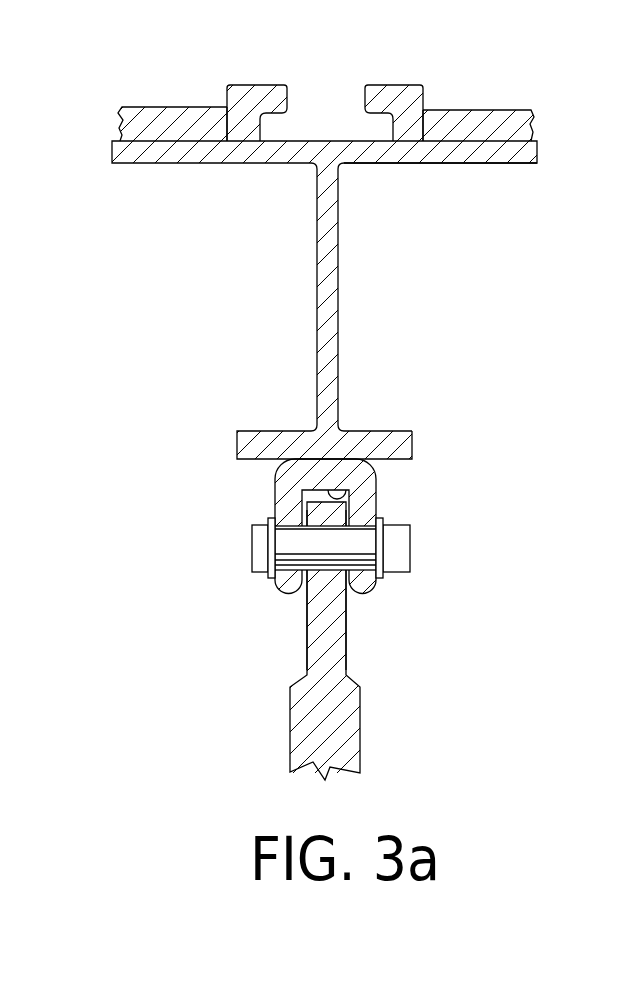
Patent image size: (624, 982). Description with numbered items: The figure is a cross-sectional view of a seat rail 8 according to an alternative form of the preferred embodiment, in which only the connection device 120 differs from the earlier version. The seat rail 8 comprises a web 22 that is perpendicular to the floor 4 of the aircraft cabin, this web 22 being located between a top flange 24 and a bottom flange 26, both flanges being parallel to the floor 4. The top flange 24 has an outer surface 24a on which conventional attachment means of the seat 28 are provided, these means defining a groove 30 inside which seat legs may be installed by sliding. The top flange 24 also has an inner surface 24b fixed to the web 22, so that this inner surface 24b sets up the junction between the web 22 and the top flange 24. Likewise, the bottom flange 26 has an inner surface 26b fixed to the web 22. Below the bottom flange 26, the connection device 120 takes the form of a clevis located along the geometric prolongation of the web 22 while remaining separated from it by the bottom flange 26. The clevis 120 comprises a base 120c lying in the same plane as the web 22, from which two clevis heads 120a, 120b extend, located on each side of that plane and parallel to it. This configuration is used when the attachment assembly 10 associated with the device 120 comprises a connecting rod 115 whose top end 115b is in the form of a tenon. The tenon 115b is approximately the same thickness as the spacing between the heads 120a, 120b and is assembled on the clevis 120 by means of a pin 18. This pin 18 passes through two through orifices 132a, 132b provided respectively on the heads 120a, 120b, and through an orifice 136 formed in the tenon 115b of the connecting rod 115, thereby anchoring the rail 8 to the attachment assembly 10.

The seat rail 8 is at (68, 162).
The floor 4 is at (155, 107).
The attachment means of the seat 28 is at (252, 78).
The groove 30 is at (380, 122).
The top flange 24 is at (537, 150).
The outer surface 24a is at (508, 124).
The inner surface 24b is at (498, 164).
The web 22 is at (338, 257).
The bottom flange 26 is at (412, 441).
The inner surface 26b is at (395, 431).
The orifice 136 is at (335, 489).
The connection device 120 is at (388, 483).
The clevis head 120a is at (373, 595).
The clevis head 120b is at (278, 595).
The base 120c is at (312, 463).
The through orifice 132a is at (383, 540).
The through orifice 132b is at (268, 538).
The pin 18 is at (257, 572).
The attachment assembly 10 is at (488, 695).
The connecting rod 115 is at (360, 717).
The top end 115b is at (325, 608).